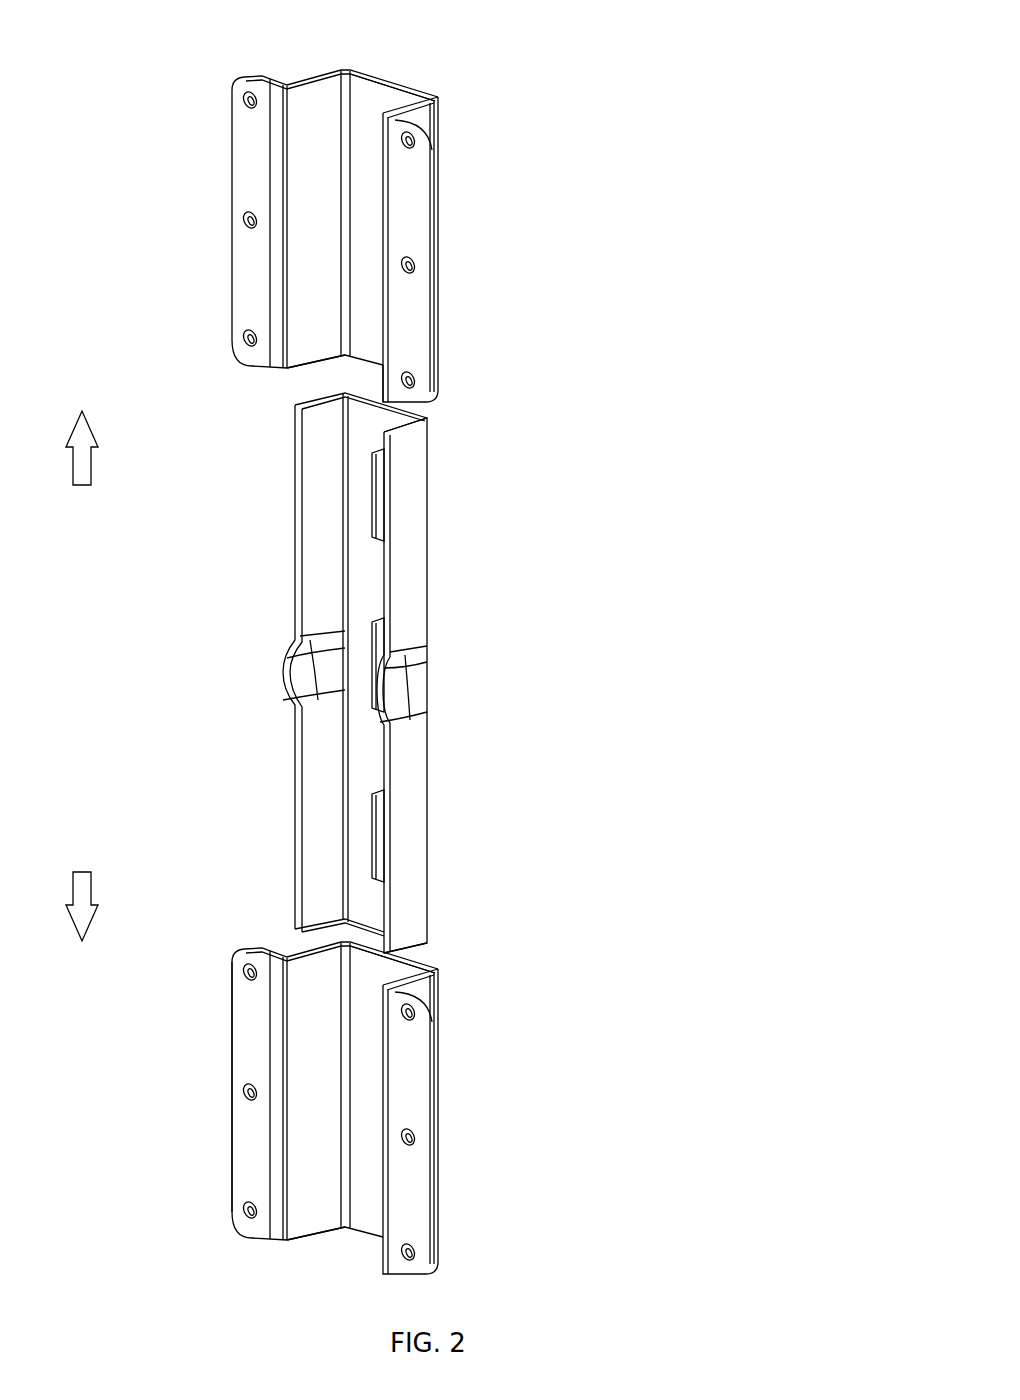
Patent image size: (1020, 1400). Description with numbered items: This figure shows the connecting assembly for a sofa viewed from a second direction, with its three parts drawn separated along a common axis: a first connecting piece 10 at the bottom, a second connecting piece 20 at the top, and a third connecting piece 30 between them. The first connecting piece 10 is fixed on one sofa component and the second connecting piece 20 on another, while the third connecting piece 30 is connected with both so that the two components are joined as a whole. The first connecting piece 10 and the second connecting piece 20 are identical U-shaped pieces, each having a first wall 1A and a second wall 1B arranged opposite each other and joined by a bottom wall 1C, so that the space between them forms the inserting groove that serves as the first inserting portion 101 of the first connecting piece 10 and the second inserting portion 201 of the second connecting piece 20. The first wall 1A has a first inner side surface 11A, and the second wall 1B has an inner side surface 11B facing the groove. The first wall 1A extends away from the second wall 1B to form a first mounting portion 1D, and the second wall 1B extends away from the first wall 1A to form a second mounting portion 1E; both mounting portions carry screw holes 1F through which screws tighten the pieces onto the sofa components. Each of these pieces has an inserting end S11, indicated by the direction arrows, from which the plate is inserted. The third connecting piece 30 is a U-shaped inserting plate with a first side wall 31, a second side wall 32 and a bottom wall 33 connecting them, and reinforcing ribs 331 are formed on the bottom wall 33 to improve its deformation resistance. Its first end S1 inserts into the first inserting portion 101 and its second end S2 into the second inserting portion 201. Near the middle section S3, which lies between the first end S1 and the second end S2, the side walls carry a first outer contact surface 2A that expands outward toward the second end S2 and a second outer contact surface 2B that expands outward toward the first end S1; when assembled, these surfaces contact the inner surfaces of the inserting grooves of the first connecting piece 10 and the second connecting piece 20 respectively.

The first connecting piece 10 is at (600, 1130).
The second connecting piece 20 is at (600, 270).
The third connecting piece 30 is at (698, 660).
The first inserting portion 101 is at (325, 1135).
The second inserting portion 201 is at (313, 265).
The first wall 1A is at (432, 118).
The second wall 1B is at (311, 100).
The bottom wall 1C is at (378, 100).
The first mounting portion 1D is at (418, 222).
The second mounting portion 1E is at (242, 197).
The screw holes 1F is at (246, 221).
The first inner side surface 11A is at (404, 100).
The flange surface 11B is at (300, 160).
The first outer contact surface 2A is at (290, 688).
The second outer contact surface 2B is at (292, 650).
The first side wall 31 is at (412, 527).
The second side wall 32 is at (315, 547).
The bottom wall 33 is at (368, 487).
The reinforcing ribs 331 is at (368, 828).
The first end S1 is at (490, 855).
The second end S2 is at (488, 455).
The middle section S3 is at (538, 688).
The inserting end S11 is at (265, 396).